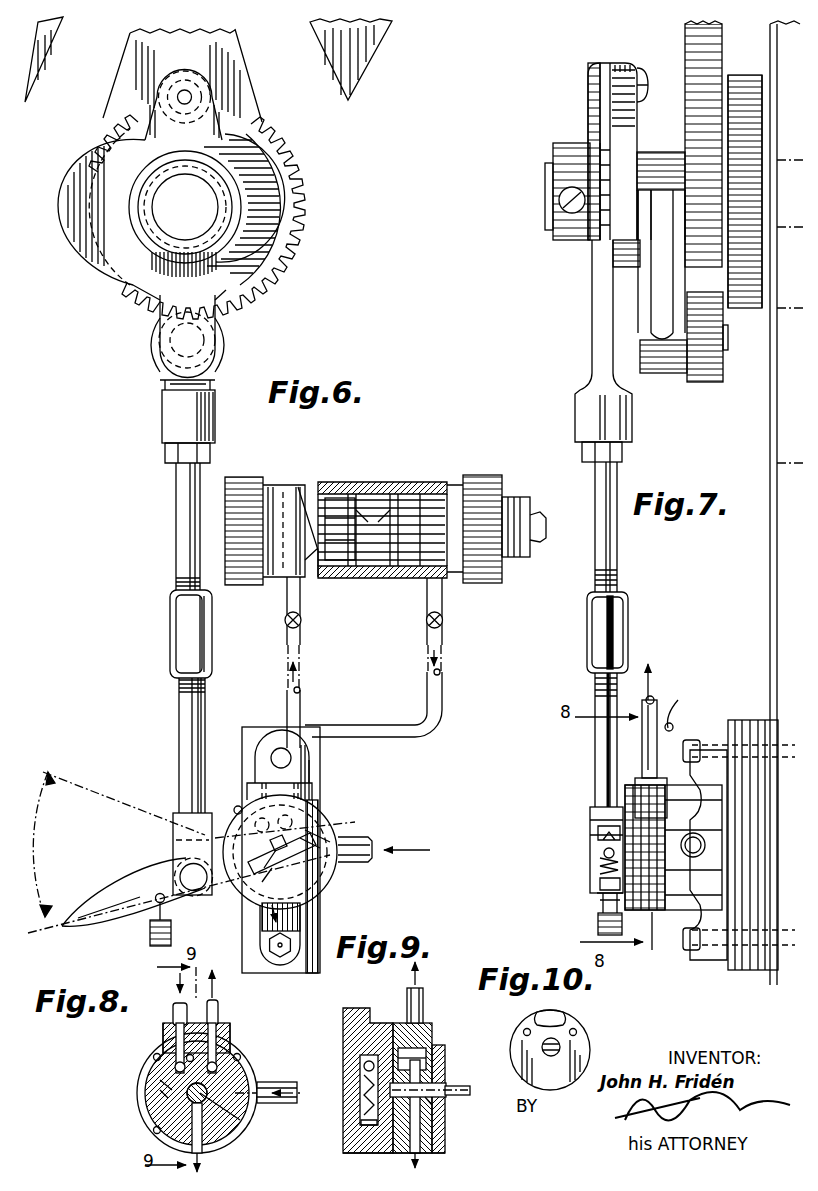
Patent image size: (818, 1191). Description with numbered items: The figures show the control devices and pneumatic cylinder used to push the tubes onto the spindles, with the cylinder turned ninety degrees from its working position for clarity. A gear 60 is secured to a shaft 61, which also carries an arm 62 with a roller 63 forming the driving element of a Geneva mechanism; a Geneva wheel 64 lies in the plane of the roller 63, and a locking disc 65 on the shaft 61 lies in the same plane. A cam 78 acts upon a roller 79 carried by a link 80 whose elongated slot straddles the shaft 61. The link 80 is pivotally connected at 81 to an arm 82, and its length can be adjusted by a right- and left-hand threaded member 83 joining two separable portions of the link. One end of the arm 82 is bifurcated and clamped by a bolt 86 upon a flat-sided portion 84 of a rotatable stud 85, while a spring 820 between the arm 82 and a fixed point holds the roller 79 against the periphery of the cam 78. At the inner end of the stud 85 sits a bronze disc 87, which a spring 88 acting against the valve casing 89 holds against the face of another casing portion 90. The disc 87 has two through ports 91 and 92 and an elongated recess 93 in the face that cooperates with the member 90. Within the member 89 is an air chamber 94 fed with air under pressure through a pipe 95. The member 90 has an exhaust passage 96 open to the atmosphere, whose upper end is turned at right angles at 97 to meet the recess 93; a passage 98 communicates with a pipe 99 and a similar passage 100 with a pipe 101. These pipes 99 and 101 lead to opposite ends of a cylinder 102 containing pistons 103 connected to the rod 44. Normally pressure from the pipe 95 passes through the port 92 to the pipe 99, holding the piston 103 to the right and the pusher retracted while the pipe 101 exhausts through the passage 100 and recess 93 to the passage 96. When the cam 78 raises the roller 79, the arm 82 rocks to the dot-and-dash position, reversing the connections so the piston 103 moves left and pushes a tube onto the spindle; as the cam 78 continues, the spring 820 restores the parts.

In FIG. 6, the rod 44 is at (541, 520).
In FIG. 6, the gear 60 is at (300, 230).
In FIG. 7, the gear 60 is at (742, 76).
In FIG. 6, the shaft 61 is at (185, 214).
In FIG. 7, the shaft 61 is at (546, 200).
In FIG. 7, the arm 62 is at (652, 283).
In FIG. 6, the roller 63 is at (232, 346).
In FIG. 7, the roller 63 is at (710, 384).
In FIG. 6, the Geneva wheel 64 is at (340, 60).
In FIG. 7, the Geneva wheel 64 is at (685, 37).
In FIG. 6, the locking disc 65 is at (283, 178).
In FIG. 7, the locking disc 65 is at (675, 196).
In FIG. 6, the cam 78 is at (80, 242).
In FIG. 7, the cam 78 is at (637, 142).
In FIG. 6, the roller 79 is at (180, 70).
In FIG. 7, the roller 79 is at (623, 64).
In FIG. 6, the link 80 is at (162, 423).
In FIG. 7, the link 80 is at (592, 322).
In FIG. 6, the pivotal connection 81 is at (198, 888).
In FIG. 7, the pivotal connection 81 is at (590, 880).
In FIG. 6, the arm 82 is at (150, 882).
In FIG. 7, the arm 82 is at (598, 900).
In FIG. 6, the spring 820 is at (152, 935).
In FIG. 7, the spring 820 is at (598, 926).
In FIG. 6, the threaded member 83 is at (170, 642).
In FIG. 7, the threaded member 83 is at (587, 612).
In FIG. 6, the flat-sided portion 84 is at (289, 856).
In FIG. 7, the flat-sided portion 84 is at (597, 853).
In FIG. 9, the flat-sided portion 84 is at (462, 1086).
In FIG. 7, the rotatable stud 85 is at (600, 882).
In FIG. 8, the rotatable stud 85 is at (228, 1122).
In FIG. 9, the rotatable stud 85 is at (440, 1097).
In FIG. 6, the bolt 86 is at (322, 840).
In FIG. 7, the bolt 86 is at (598, 838).
In FIG. 9, the bronze disc 87 is at (365, 1150).
In FIG. 10, the bronze disc 87 is at (588, 1048).
In FIG. 9, the spring 88 is at (360, 1120).
In FIG. 7, the valve casing 89 is at (705, 816).
In FIG. 9, the valve casing 89 is at (343, 1015).
In FIG. 7, the valve casing portion 90 is at (635, 805).
In FIG. 8, the valve casing portion 90 is at (160, 1098).
In FIG. 9, the valve casing portion 90 is at (445, 1135).
In FIG. 8, the port 91 is at (160, 1085).
In FIG. 10, the port 91 is at (524, 1032).
In FIG. 10, the port 92 is at (576, 1033).
In FIG. 9, the recess 93 is at (375, 1072).
In FIG. 10, the recess 93 is at (558, 1016).
In FIG. 9, the air chamber 94 is at (378, 1058).
In FIG. 7, the pipe 95 is at (700, 845).
In FIG. 8, the pipe 95 is at (279, 1082).
In FIG. 8, the exhaust passage 96 is at (205, 1140).
In FIG. 9, the exhaust passage 96 is at (430, 1150).
In FIG. 8, the right-angled end of passage 97 is at (185, 1053).
In FIG. 9, the right-angled end of passage 97 is at (400, 1022).
In FIG. 8, the passage 98 is at (216, 1050).
In FIG. 9, the passage 98 is at (432, 1050).
In FIG. 6, the pipe 99 is at (300, 697).
In FIG. 7, the pipe 99 is at (652, 698).
In FIG. 8, the pipe 99 is at (219, 1012).
In FIG. 9, the pipe 99 is at (423, 1003).
In FIG. 8, the passage 100 is at (176, 1048).
In FIG. 6, the pipe 101 is at (432, 695).
In FIG. 7, the pipe 101 is at (680, 708).
In FIG. 8, the pipe 101 is at (173, 1013).
In FIG. 6, the cylinder 102 is at (355, 482).
In FIG. 6, the piston 103 is at (365, 578).